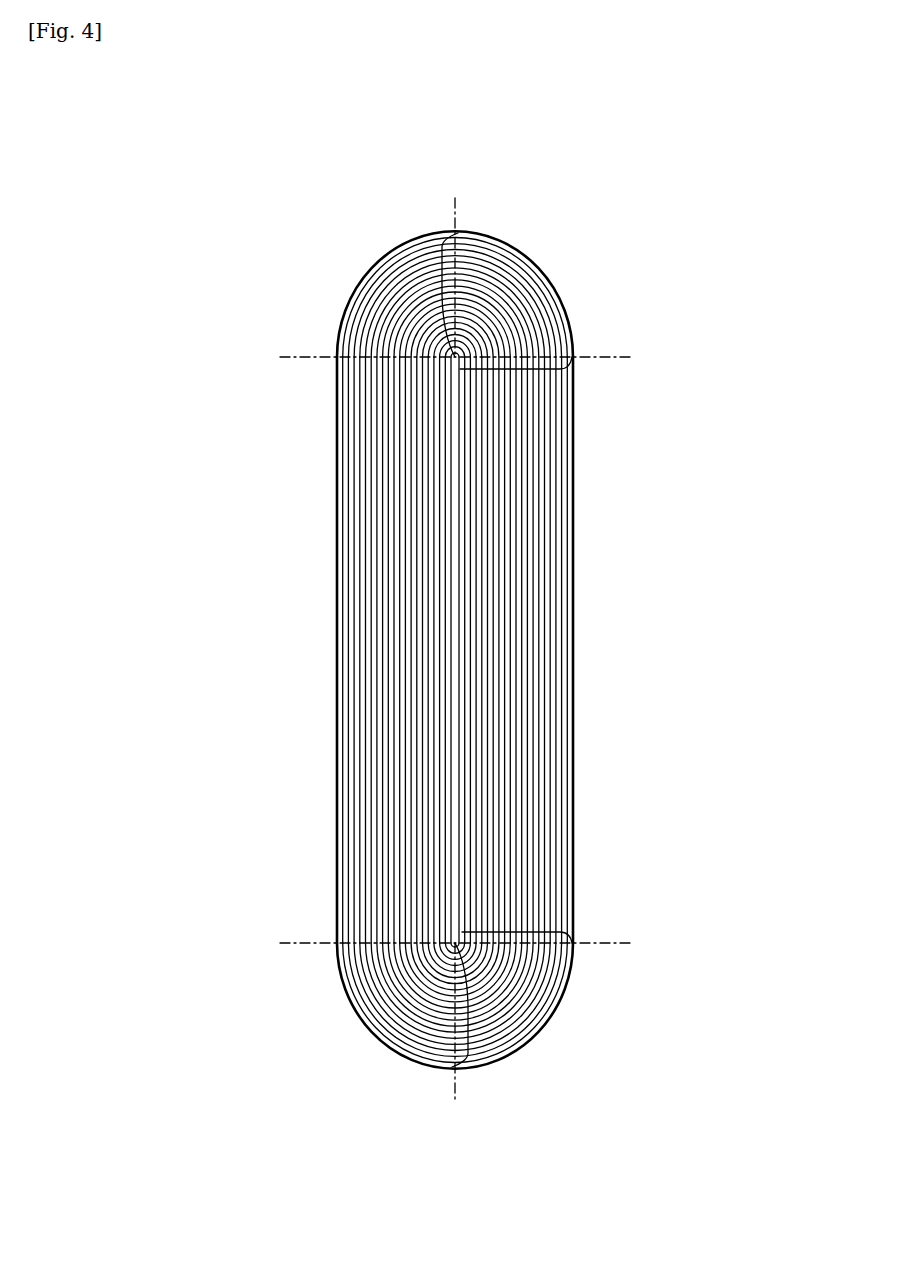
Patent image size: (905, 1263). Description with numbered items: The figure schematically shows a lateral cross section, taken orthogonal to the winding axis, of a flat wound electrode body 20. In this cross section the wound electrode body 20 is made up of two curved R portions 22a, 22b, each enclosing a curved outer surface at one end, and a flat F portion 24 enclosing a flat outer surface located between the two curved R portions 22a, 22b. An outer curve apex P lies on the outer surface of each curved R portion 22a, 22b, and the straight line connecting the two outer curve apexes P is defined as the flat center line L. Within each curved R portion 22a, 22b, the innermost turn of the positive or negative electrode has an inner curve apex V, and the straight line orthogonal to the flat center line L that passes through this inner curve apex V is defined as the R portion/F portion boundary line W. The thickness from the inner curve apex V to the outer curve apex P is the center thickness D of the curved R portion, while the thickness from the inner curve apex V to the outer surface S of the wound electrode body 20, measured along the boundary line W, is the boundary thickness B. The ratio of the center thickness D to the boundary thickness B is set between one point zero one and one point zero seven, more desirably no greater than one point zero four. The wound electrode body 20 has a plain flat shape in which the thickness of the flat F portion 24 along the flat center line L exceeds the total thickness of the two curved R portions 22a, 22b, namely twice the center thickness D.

The wound electrode body 20 is at (737, 208).
The curved R portion 22a is at (542, 266).
The curved R portion 22b is at (560, 1014).
The flat F portion 24 is at (578, 681).
The flat center line L is at (458, 204).
The R portion/F portion boundary line W is at (613, 357).
The center thickness of the curved R portion D is at (442, 295).
The outer curve apex P is at (448, 237).
The inner curve apex V is at (455, 357).
The outer surface S is at (573, 357).
The boundary thickness of the curved R portion B is at (518, 370).